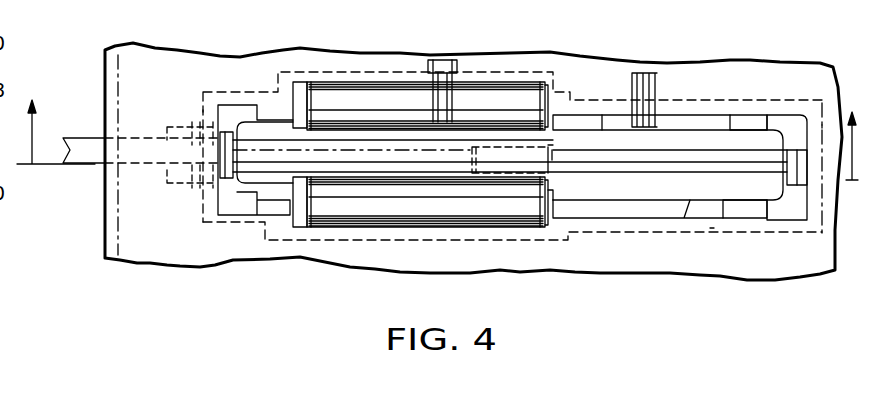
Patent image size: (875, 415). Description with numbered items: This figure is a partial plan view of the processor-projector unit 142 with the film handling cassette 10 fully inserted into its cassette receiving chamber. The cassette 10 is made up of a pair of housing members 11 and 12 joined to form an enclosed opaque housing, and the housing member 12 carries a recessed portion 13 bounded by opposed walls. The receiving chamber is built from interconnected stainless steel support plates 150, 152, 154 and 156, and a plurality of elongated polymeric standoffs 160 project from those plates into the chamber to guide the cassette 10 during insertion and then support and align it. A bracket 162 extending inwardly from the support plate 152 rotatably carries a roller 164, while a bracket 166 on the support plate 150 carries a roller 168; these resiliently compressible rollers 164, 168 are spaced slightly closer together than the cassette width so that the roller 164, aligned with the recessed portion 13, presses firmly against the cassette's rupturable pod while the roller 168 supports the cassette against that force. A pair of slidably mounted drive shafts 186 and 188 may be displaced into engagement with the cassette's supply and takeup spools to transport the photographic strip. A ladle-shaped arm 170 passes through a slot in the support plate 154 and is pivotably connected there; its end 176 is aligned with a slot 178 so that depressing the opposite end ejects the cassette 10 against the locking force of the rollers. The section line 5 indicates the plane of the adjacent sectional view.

The section line 5- 5 is at (437, 156).
The film handling cassette 10 is at (689, 120).
The housing member 11 is at (602, 115).
The housing member 12 is at (692, 203).
The recessed portion 13 is at (268, 226).
The processor-projector unit 142 is at (130, 266).
The support plate 150 is at (233, 92).
The support plate 152 is at (712, 228).
The support plate 154 is at (205, 110).
The support plate 156 is at (822, 127).
The elongated standoffs 160 is at (268, 110).
The bracket 162 is at (493, 230).
The roller 164 is at (405, 212).
The bracket 166 is at (527, 85).
The roller 168 is at (353, 98).
The ladle-shaped arm 170 is at (82, 145).
The end of arm 176 is at (588, 233).
The slot 178 is at (588, 233).
The drive shaft 186 is at (658, 88).
The drive shaft 188 is at (452, 78).